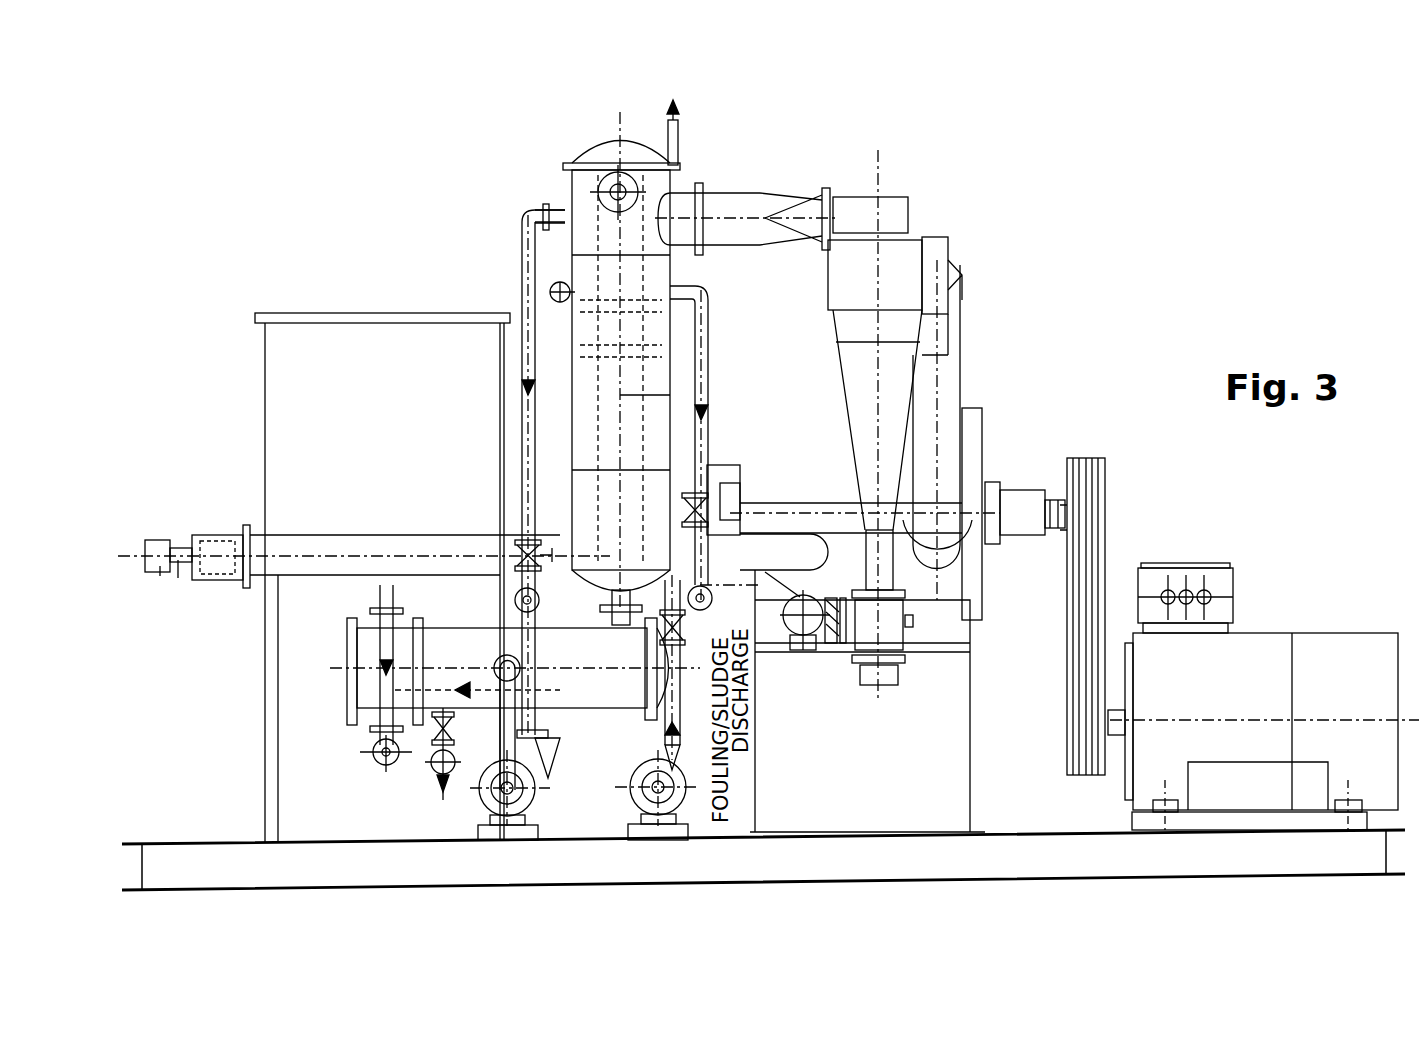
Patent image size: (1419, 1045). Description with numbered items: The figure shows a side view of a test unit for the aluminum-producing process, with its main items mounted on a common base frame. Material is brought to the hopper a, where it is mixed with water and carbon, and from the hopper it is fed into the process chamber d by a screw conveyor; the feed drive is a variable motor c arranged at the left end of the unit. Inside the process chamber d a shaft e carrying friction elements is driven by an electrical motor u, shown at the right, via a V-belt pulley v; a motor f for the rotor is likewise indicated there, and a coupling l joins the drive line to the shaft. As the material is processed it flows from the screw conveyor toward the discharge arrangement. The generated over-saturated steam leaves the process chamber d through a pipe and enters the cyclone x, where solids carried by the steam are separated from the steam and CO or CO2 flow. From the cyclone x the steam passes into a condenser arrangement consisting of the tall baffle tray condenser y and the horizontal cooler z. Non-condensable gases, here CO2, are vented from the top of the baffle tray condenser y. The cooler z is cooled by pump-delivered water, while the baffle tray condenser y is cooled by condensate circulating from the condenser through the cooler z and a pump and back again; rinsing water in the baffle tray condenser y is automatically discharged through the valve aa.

The hopper a is at (382, 577).
The valve aa is at (520, 600).
The variable motor c is at (147, 574).
The process chamber d is at (740, 482).
The shaft e is at (1062, 535).
The motor f is at (1263, 707).
The coupling l is at (1010, 490).
The electrical motor u is at (1305, 635).
The V-belt pulley v is at (1095, 460).
The cyclone x is at (905, 260).
The baffle tray condenser y is at (596, 140).
The cooler z is at (588, 710).